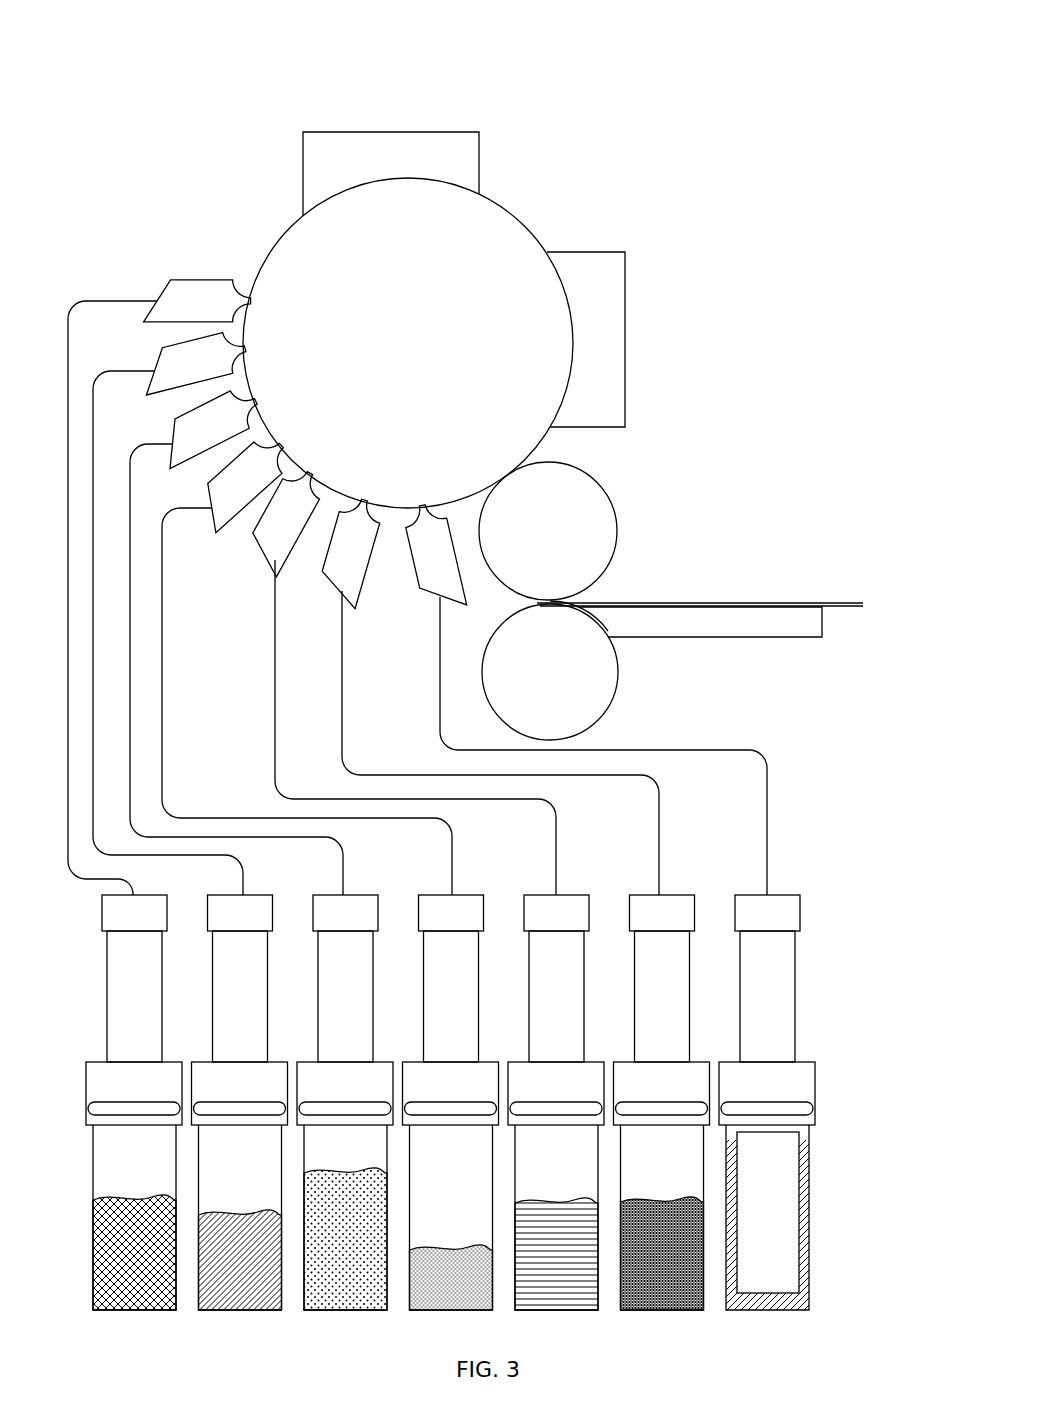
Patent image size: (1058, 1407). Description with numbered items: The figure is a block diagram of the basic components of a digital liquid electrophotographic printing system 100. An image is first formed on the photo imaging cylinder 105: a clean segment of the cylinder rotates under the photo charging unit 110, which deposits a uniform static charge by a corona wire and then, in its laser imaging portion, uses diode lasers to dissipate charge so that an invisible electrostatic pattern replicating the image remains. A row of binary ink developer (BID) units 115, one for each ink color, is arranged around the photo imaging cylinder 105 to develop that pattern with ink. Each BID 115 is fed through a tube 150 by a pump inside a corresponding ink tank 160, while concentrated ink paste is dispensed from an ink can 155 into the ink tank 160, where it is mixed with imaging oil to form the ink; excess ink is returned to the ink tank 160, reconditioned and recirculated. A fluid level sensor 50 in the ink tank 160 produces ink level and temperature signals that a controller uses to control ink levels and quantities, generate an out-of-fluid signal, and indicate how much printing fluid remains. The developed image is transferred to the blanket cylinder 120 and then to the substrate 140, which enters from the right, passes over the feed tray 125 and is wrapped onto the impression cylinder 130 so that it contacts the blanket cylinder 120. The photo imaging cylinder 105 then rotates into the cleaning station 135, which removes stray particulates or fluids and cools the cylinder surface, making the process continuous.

The digital LEP system 100 is at (585, 84).
The photo imaging cylinder 105 is at (384, 391).
The photo charging unit 110 is at (390, 153).
The binary ink developer unit 115 is at (190, 302).
The blanket cylinder 120 is at (532, 577).
The feed tray 125 is at (750, 623).
The impression cylinder 130 is at (530, 727).
The cleaning station 135 is at (620, 257).
The substrate 140 is at (697, 603).
The tube 150 is at (767, 823).
The ink can 155 is at (790, 963).
The ink tank 160 is at (816, 1180).
The fluid level sensor 50 is at (800, 1260).